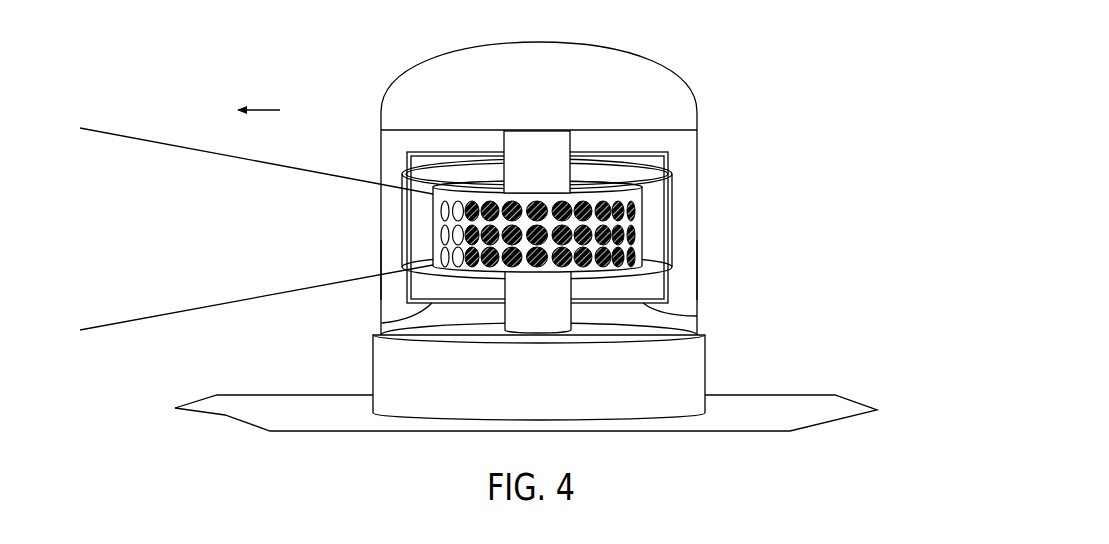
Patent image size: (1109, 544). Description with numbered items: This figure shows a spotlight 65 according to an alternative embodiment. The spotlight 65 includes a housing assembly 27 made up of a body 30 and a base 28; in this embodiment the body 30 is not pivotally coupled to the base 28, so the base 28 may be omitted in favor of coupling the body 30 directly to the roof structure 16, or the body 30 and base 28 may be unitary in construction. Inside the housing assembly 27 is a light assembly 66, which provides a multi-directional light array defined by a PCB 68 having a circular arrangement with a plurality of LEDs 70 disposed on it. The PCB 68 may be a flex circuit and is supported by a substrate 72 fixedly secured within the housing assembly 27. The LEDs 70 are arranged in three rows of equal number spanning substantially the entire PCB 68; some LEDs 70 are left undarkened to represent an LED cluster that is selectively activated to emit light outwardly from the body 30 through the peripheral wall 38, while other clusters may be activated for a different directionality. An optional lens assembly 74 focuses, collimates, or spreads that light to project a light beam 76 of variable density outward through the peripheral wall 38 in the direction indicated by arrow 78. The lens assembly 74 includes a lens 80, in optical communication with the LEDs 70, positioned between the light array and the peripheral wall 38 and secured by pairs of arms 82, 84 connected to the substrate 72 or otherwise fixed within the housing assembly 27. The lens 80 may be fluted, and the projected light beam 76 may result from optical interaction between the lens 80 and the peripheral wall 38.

The roof structure 16 is at (805, 407).
The housing assembly 27 is at (717, 76).
The base 28 is at (687, 373).
The body 30 is at (731, 285).
The peripheral wall 38 is at (380, 293).
The spotlight 65 is at (391, 60).
The light assembly 66 is at (650, 196).
The PCB 68 is at (618, 165).
The LEDs 70 is at (540, 273).
The substrate 72 is at (550, 147).
The lens assembly 74 is at (362, 193).
The light beam 76 is at (139, 152).
The arrow 78 is at (262, 108).
The lens 80 is at (408, 228).
The arm 82 is at (442, 152).
The arm 84 is at (383, 323).